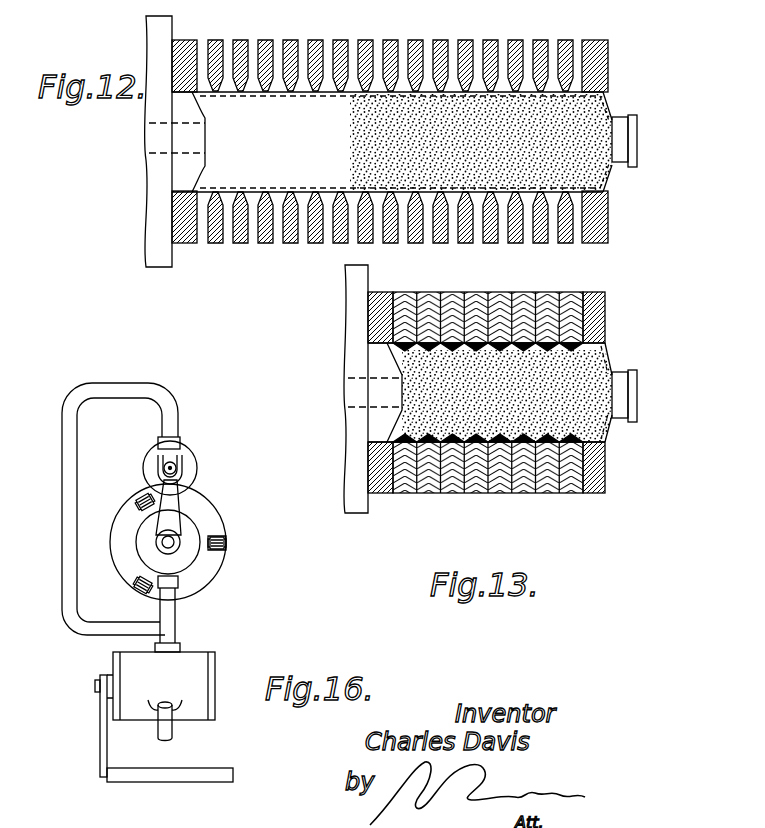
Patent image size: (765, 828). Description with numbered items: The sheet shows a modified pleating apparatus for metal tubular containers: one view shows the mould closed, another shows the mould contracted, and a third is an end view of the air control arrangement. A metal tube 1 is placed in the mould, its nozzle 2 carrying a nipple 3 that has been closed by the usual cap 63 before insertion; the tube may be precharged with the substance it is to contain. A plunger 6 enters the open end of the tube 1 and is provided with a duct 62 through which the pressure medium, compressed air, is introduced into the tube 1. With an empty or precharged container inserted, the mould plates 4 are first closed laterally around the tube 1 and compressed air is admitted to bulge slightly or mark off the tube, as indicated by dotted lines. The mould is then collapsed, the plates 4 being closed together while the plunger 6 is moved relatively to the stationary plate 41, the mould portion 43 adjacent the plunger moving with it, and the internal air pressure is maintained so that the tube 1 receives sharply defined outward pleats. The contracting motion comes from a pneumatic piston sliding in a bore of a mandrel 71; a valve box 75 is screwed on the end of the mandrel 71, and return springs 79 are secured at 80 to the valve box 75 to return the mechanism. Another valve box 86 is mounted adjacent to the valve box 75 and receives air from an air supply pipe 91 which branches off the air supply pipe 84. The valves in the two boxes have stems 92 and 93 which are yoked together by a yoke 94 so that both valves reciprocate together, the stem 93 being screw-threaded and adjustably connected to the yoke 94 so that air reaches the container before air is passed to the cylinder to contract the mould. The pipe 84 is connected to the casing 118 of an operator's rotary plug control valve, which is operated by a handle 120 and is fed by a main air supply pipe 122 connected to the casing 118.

In FIG. 12, the tube 1 is at (306, 190).
In FIG. 13, the tube 1 is at (586, 350).
In FIG. 12, the nozzle 2 is at (607, 97).
In FIG. 13, the nozzle 2 is at (600, 436).
In FIG. 12, the nipple 3 is at (612, 125).
In FIG. 13, the nipple 3 is at (610, 418).
In FIG. 12, the mould plates 4 is at (390, 37).
In FIG. 13, the mould plates 4 is at (470, 493).
In FIG. 12, the plunger 6 is at (199, 118).
In FIG. 13, the plunger 6 is at (383, 361).
In FIG. 12, the stationary plate 41 is at (590, 42).
In FIG. 13, the stationary plate 41 is at (587, 493).
In FIG. 12, the base fin block 43 is at (192, 90).
In FIG. 13, the base fin block 43 is at (383, 493).
In FIG. 12, the duct 62 is at (158, 230).
In FIG. 13, the duct 62 is at (358, 322).
In FIG. 12, the cap 63 is at (620, 163).
In FIG. 13, the cap 63 is at (628, 372).
In FIG. 16, the mandrel 71 is at (195, 498).
In FIG. 16, the valve box 75 is at (195, 522).
In FIG. 16, the return springs 79 is at (143, 493).
In FIG. 16, the spring anchorage on valve box 80 is at (222, 553).
In FIG. 16, the air supply pipe 84 is at (178, 602).
In FIG. 16, the valve box 86 is at (187, 460).
In FIG. 16, the air supply pipe 91 is at (105, 387).
In FIG. 16, the valve stem 92 is at (163, 542).
In FIG. 16, the valve stem 93 is at (172, 466).
In FIG. 16, the yoke 94 is at (167, 522).
In FIG. 16, the casing 118 is at (190, 658).
In FIG. 16, the handle 120 is at (102, 748).
In FIG. 16, the main air supply pipe 122 is at (173, 733).